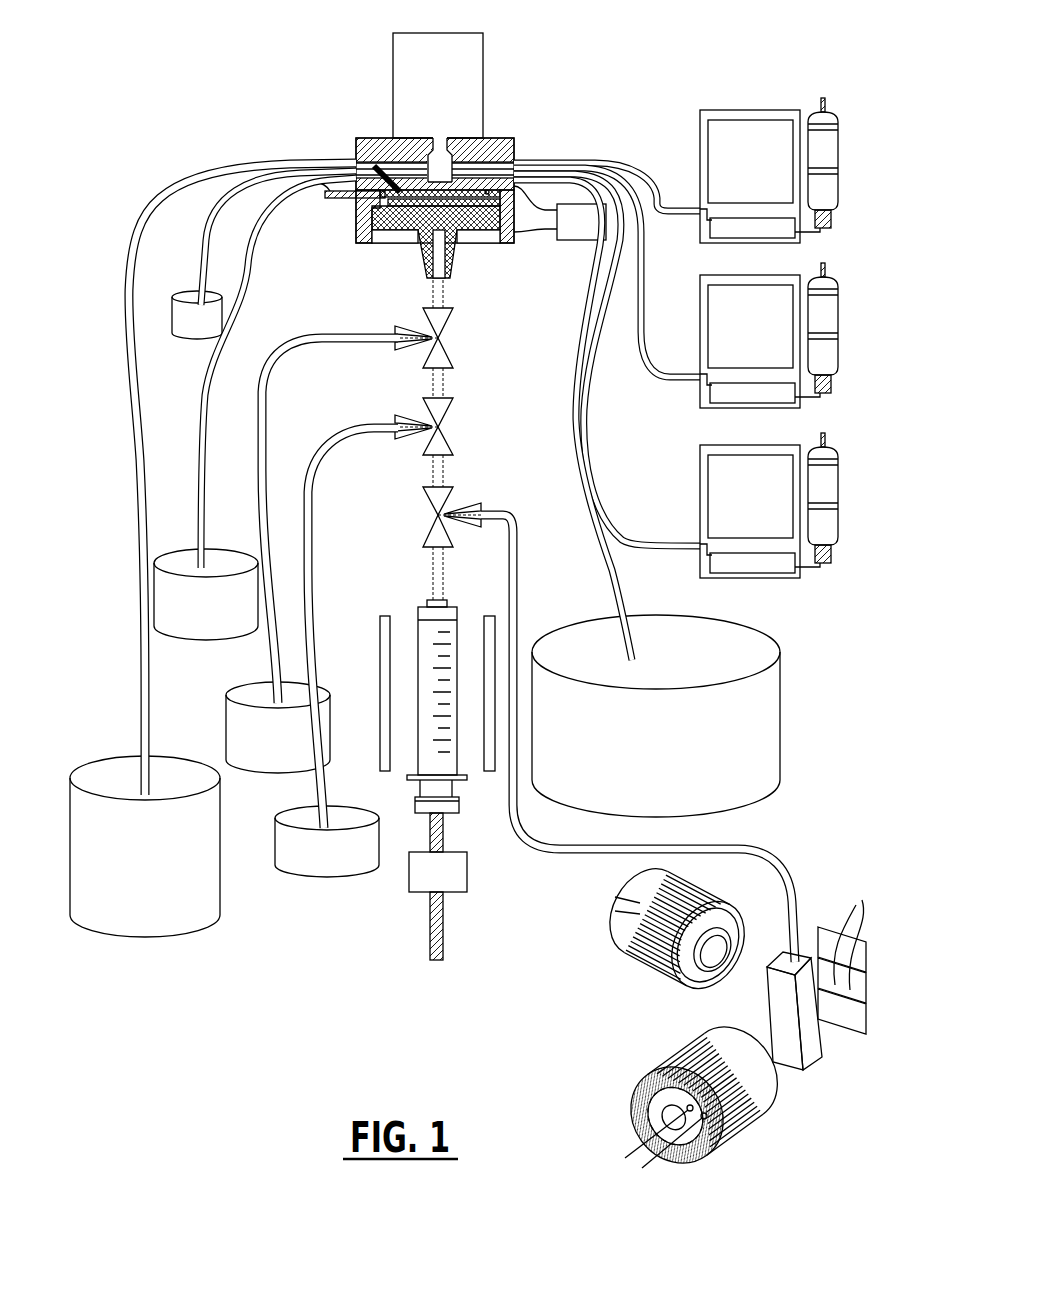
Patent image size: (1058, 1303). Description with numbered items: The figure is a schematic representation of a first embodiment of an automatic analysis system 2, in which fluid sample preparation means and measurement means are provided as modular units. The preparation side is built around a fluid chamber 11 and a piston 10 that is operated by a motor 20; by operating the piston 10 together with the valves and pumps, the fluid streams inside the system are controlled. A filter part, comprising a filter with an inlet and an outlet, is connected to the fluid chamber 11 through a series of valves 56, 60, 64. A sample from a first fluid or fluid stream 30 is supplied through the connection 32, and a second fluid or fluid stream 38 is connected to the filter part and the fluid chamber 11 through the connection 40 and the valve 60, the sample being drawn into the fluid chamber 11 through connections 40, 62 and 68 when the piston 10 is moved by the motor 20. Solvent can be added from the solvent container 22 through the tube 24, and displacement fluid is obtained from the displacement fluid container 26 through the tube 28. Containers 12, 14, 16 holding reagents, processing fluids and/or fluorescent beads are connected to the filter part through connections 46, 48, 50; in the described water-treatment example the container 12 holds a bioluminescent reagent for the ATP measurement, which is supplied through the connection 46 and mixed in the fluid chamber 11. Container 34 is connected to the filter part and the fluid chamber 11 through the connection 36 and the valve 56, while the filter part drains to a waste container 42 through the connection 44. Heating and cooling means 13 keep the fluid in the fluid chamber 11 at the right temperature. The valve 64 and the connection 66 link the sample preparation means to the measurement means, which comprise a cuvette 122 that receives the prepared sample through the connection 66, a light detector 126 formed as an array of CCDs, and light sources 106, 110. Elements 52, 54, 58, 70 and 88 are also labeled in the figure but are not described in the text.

The automatic analysis system 2 is at (176, 86).
The piston 10 is at (440, 612).
The fluid chamber 11 is at (467, 797).
The container 12 is at (769, 170).
The heating and cooling means 13 is at (385, 628).
The container 14 is at (769, 335).
The container 16 is at (769, 505).
The motor 20 is at (438, 872).
The solvent container 22 is at (145, 846).
The tube 24 is at (140, 672).
The displacement fluid container 26 is at (197, 315).
The tube 28 is at (206, 240).
The first fluid or fluid stream 30 is at (206, 594).
The connection 32 is at (252, 275).
The container 34 is at (278, 727).
The connection 36 is at (262, 398).
The second fluid or fluid stream 38 is at (327, 841).
The connection 40 is at (332, 455).
The waste container 42 is at (656, 716).
The connection 44 is at (635, 613).
The connection 46 is at (642, 165).
The connection 48 is at (650, 250).
The connection 50 is at (608, 402).
The sensor 52 is at (560, 213).
The tubing segment 54 is at (445, 292).
The valve 56 is at (472, 327).
The tubing segment 58 is at (446, 378).
The valve 60 is at (472, 417).
The connection 62 is at (446, 468).
The valve 64 is at (472, 503).
The connection 66 is at (522, 545).
The connection 68 is at (448, 556).
The drive unit 70 is at (393, 52).
The seal 88 is at (396, 184).
The light source 106 is at (625, 1097).
The light source 110 is at (620, 931).
The cuvette 122 is at (810, 1062).
The light detector 126 is at (838, 930).